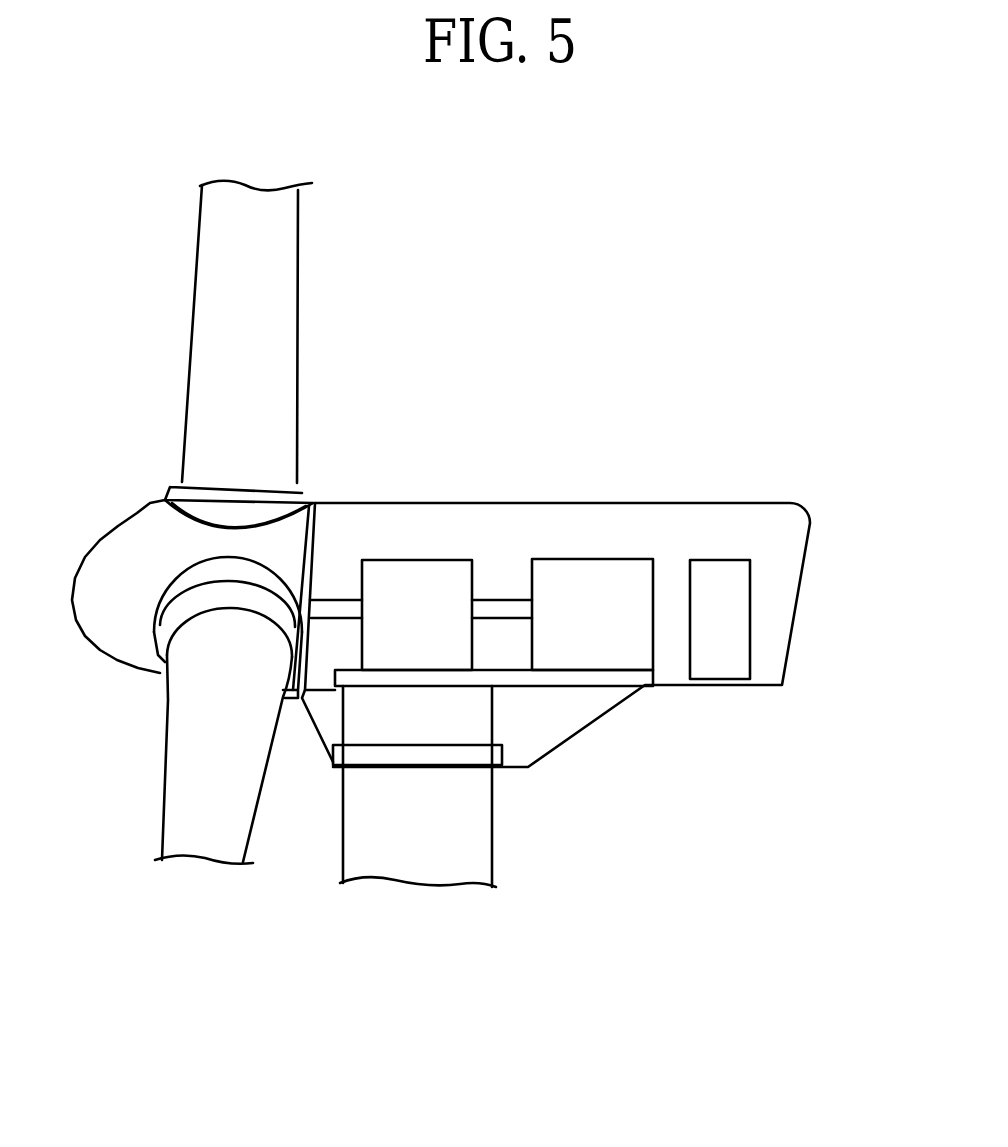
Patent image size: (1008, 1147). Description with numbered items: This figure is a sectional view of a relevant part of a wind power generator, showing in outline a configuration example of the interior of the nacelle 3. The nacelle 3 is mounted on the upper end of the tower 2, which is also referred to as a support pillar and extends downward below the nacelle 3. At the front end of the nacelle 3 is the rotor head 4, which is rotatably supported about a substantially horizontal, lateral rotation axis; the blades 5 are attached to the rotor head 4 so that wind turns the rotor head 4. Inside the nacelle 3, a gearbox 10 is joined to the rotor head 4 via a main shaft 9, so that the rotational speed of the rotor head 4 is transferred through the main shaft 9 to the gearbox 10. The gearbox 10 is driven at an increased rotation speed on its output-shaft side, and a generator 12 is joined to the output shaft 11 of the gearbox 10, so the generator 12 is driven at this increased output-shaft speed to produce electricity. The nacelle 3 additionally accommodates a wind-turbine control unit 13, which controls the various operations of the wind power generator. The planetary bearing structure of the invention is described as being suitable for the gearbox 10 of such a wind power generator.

The tower 2 is at (496, 846).
The nacelle 3 is at (796, 494).
The rotor head 4 is at (114, 542).
The wind turbine blade 5 is at (282, 255).
The main shaft 9 is at (340, 600).
The gearbox 10 is at (422, 560).
The output shaft 11 is at (508, 600).
The generator 12 is at (596, 559).
The wind-turbine control unit 13 is at (753, 613).